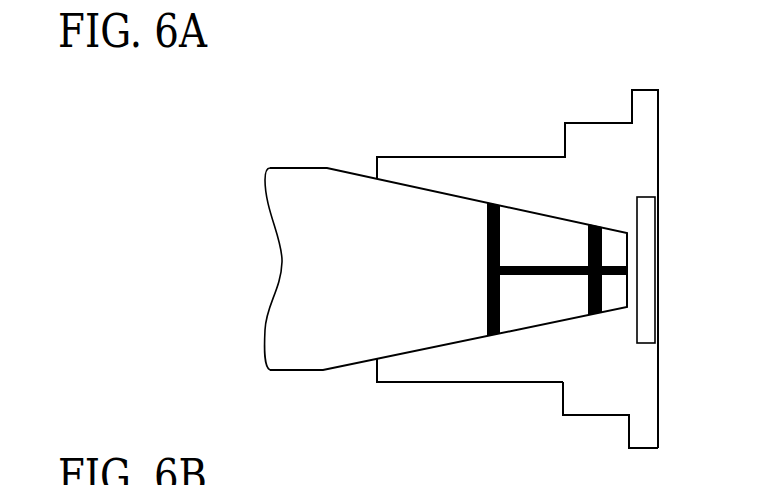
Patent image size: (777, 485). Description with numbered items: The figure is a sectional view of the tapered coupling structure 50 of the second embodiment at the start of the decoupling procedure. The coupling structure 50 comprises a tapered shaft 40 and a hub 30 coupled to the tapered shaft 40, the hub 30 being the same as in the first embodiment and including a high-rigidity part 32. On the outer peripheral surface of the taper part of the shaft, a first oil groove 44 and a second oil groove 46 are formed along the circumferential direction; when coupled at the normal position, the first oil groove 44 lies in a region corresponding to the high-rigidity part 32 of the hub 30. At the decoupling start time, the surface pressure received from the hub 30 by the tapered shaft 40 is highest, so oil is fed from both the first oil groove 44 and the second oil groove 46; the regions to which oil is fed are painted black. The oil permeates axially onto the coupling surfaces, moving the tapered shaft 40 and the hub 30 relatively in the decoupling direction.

The hub 30 is at (428, 385).
The high-rigidity part 32 is at (598, 416).
The tapered shaft 40 is at (291, 167).
The first oil groove 44 is at (595, 223).
The second oil groove 46 is at (495, 201).
The coupling structure 50 is at (372, 121).